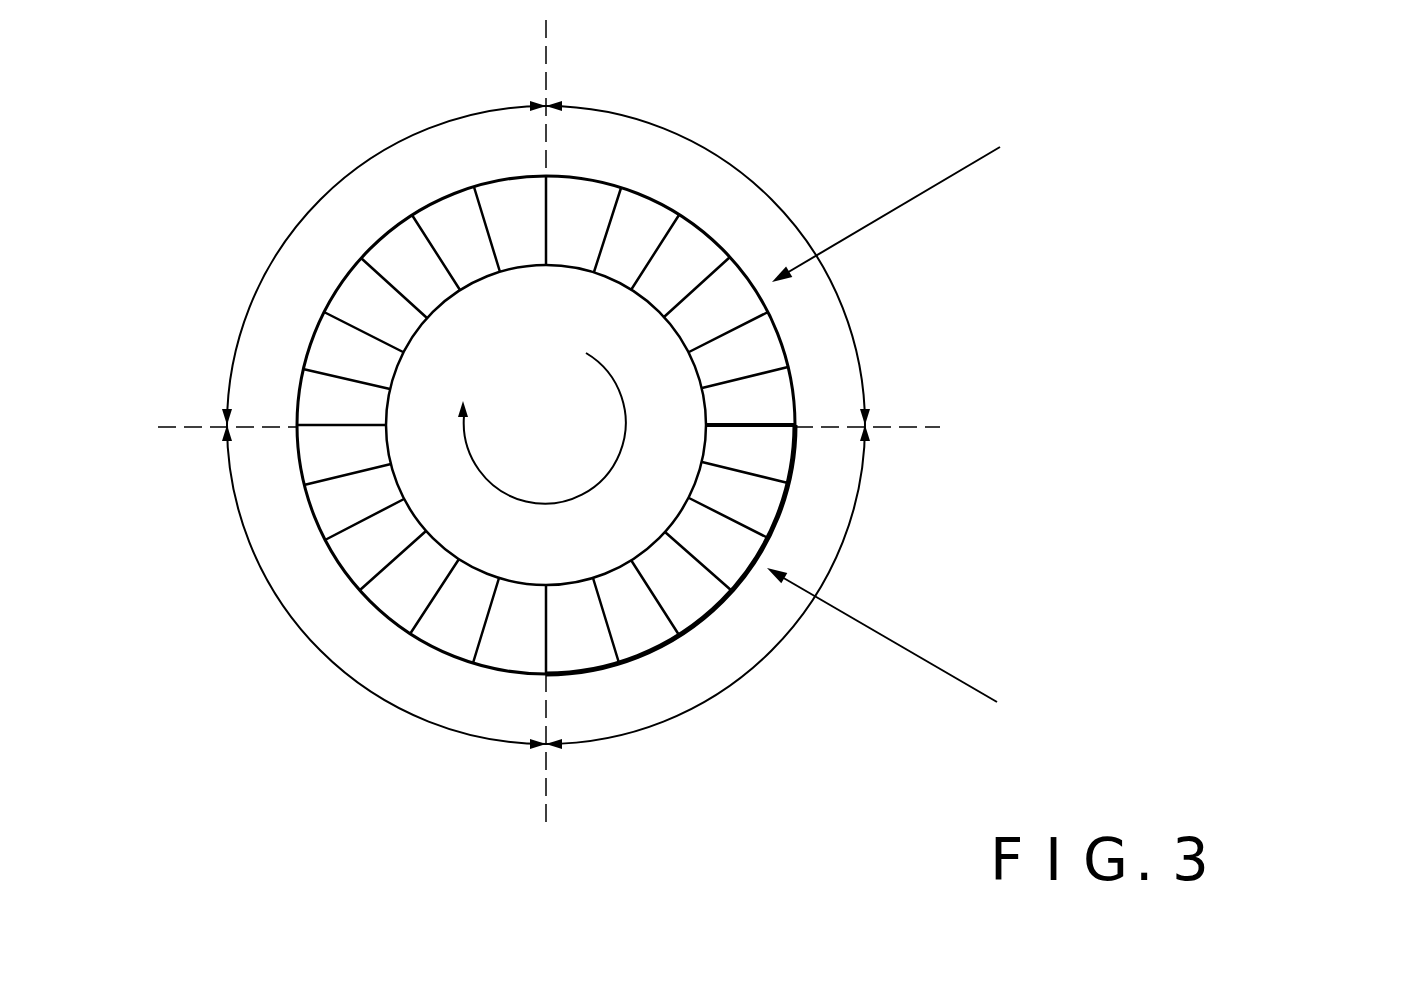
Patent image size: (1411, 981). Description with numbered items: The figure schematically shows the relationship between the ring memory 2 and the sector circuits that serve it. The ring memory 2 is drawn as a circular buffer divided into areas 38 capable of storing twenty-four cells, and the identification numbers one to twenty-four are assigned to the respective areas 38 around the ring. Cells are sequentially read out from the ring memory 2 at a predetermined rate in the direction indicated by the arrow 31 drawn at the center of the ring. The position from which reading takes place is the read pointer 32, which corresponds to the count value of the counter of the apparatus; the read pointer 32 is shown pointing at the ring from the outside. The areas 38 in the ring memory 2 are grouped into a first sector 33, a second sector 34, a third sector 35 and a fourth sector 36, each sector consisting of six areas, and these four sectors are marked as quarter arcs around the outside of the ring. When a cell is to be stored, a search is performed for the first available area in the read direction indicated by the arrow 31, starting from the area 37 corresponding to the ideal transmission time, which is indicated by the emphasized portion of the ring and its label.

The ring memory 2 is at (882, 502).
The arrow 31 is at (625, 445).
The read pointer 32 is at (892, 210).
The first sector 33 is at (683, 130).
The second sector 34 is at (665, 720).
The third sector 35 is at (350, 680).
The fourth sector 36 is at (405, 137).
The area corresponding to the ideal transmission time 37 is at (875, 633).
The areas 38 is at (325, 262).